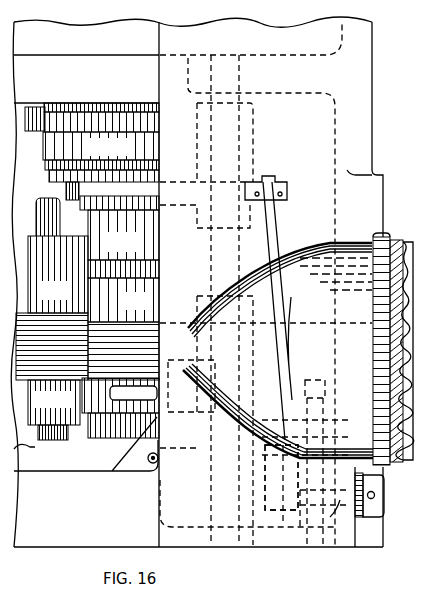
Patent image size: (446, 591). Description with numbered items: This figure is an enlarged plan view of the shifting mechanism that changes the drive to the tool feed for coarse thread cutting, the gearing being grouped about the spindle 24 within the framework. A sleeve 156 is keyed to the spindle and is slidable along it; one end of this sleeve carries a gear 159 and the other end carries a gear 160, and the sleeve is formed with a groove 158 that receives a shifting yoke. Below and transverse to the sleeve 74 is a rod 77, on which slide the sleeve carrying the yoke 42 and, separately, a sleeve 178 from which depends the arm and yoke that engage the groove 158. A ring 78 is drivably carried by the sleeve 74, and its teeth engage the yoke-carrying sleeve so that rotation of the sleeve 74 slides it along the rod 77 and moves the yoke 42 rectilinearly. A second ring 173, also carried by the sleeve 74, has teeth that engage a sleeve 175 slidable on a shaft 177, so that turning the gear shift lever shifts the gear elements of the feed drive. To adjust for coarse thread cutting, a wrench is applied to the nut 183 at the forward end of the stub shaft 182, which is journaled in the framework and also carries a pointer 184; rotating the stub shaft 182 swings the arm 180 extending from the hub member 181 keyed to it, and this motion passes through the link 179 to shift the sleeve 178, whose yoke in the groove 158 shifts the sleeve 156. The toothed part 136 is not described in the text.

The spindle 24 is at (362, 104).
The yoke 42 is at (108, 406).
The sleeve 74 is at (122, 332).
The rod 77 is at (206, 258).
The ring 78 is at (198, 303).
The ring gear 136 is at (388, 248).
The sleeve 156 is at (101, 157).
The groove 158 is at (84, 183).
The gear 159 is at (122, 264).
The gear 160 is at (88, 118).
The ring 173 is at (52, 320).
The sleeve 175 is at (57, 402).
The shaft 177 is at (52, 440).
The sleeve 178 is at (256, 144).
The link 179 is at (272, 278).
The arm 180 is at (286, 440).
The hub member 181 is at (287, 530).
The stub shaft 182 is at (300, 522).
The nut 183 is at (384, 516).
The pointer 184 is at (375, 518).